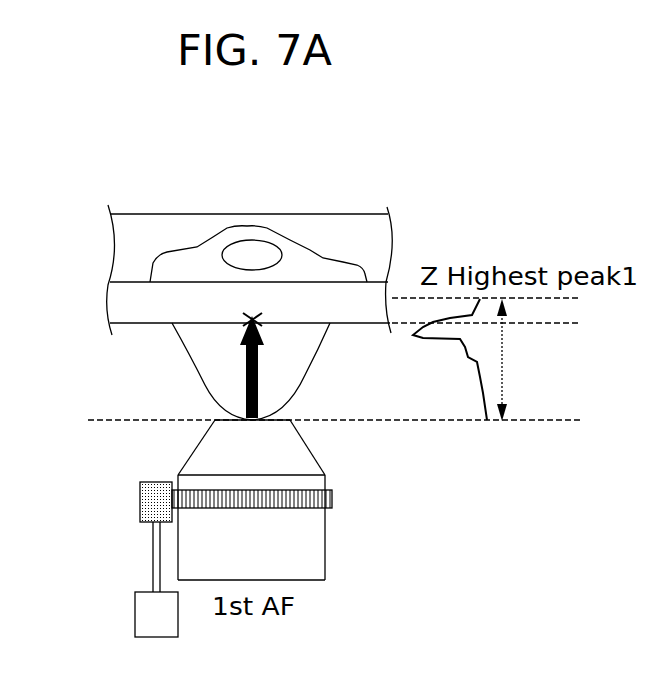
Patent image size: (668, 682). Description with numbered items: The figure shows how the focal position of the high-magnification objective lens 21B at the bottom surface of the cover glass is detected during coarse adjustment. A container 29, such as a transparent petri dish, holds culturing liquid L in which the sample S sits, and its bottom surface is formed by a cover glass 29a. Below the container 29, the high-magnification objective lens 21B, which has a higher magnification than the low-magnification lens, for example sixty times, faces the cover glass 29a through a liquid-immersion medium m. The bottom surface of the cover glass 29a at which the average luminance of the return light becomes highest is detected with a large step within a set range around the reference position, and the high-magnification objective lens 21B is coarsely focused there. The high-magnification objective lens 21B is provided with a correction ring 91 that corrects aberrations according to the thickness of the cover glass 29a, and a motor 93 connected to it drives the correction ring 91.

The container 29 is at (322, 183).
The culturing liquid L is at (148, 235).
The sample S is at (206, 240).
The cover glass 29a is at (157, 305).
The liquid-immersion medium m is at (290, 358).
The correction ring 91 is at (335, 497).
The high-magnification objective lens 21B is at (326, 520).
The motor 93 is at (135, 611).